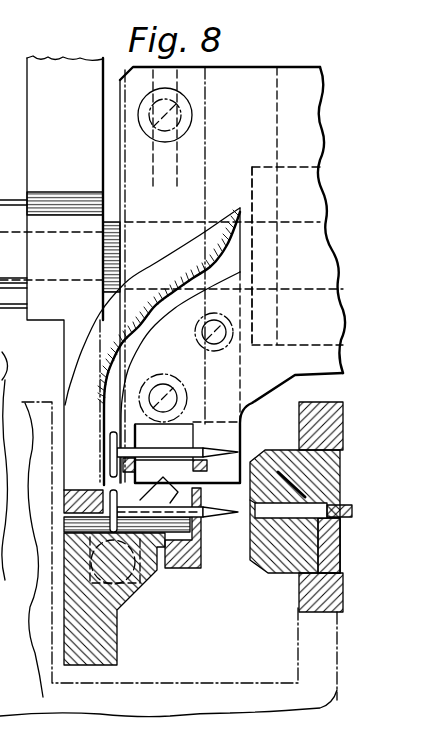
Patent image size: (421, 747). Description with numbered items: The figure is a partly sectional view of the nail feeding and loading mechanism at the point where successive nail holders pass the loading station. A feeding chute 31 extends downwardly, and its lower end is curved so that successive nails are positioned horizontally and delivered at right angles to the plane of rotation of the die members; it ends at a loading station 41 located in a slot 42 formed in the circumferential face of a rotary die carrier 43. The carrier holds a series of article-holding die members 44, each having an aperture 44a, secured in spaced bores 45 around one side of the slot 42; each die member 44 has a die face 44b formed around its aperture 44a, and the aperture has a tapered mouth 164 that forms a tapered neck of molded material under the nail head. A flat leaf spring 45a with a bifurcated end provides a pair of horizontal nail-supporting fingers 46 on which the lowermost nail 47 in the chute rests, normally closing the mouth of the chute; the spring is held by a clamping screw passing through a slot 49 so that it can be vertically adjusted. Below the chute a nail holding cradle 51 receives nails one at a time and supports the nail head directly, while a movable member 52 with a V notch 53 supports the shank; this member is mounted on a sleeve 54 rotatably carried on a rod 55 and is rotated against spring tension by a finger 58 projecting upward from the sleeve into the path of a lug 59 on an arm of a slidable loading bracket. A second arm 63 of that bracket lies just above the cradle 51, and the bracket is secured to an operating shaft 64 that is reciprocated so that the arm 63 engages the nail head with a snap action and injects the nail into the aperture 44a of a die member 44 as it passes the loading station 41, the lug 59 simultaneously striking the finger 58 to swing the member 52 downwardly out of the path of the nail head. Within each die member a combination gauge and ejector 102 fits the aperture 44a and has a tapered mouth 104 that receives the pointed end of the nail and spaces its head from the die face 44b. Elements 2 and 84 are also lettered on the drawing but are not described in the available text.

The support bracket 2 is at (40, 147).
The feeding chute 31 is at (200, 292).
The loading station 41 is at (198, 587).
The slot 42 is at (297, 640).
The rotary die carrier 43 is at (27, 722).
The article-holding die member 44 is at (280, 450).
The aperture 44a is at (300, 573).
The die face 44b is at (248, 560).
The spaced bores 45 is at (322, 582).
The flat leaf spring 45a is at (207, 176).
The nail-supporting fingers 46 is at (208, 470).
The nail 47 is at (158, 453).
The slot 49 is at (180, 85).
The nail holding cradle 51 is at (120, 588).
The movable member 52 is at (201, 549).
The V notch 53 is at (201, 497).
The sleeve 54 is at (118, 612).
The rod 55 is at (63, 596).
The finger 58 is at (172, 490).
The lug 59 is at (150, 513).
The second arm 63 is at (86, 490).
The operating shaft 64 is at (141, 222).
The lever 84 is at (0, 365).
The combination gauge and ejector 102 is at (296, 593).
The tapered mouth 104 is at (264, 460).
The tapered mouth 164 is at (262, 514).